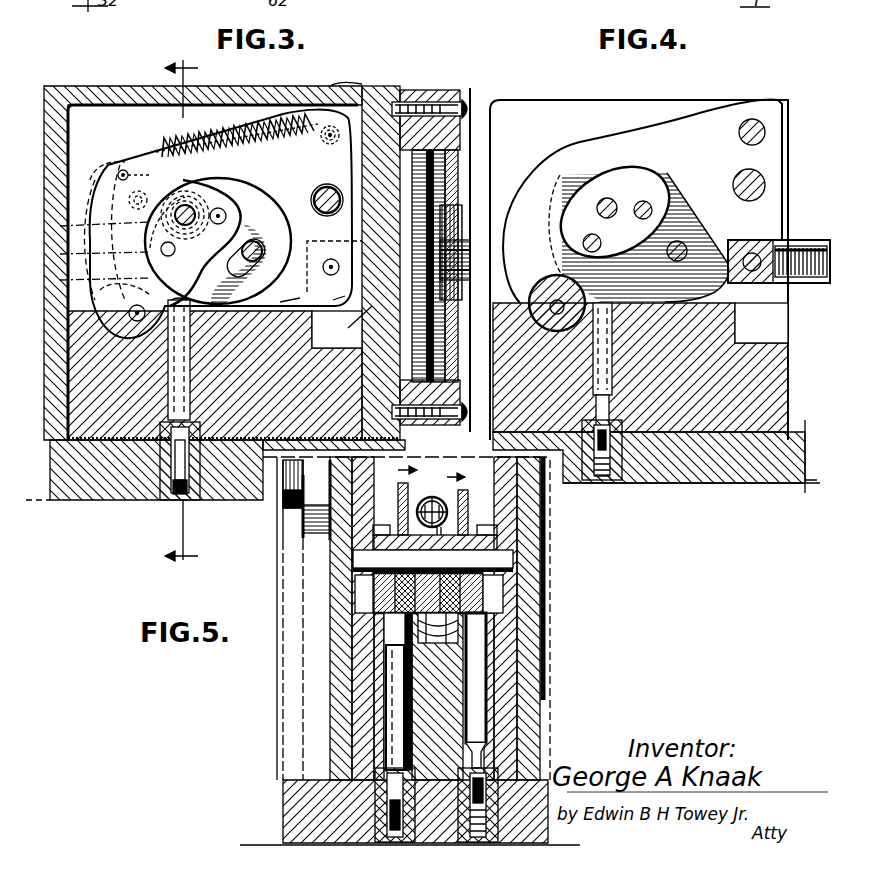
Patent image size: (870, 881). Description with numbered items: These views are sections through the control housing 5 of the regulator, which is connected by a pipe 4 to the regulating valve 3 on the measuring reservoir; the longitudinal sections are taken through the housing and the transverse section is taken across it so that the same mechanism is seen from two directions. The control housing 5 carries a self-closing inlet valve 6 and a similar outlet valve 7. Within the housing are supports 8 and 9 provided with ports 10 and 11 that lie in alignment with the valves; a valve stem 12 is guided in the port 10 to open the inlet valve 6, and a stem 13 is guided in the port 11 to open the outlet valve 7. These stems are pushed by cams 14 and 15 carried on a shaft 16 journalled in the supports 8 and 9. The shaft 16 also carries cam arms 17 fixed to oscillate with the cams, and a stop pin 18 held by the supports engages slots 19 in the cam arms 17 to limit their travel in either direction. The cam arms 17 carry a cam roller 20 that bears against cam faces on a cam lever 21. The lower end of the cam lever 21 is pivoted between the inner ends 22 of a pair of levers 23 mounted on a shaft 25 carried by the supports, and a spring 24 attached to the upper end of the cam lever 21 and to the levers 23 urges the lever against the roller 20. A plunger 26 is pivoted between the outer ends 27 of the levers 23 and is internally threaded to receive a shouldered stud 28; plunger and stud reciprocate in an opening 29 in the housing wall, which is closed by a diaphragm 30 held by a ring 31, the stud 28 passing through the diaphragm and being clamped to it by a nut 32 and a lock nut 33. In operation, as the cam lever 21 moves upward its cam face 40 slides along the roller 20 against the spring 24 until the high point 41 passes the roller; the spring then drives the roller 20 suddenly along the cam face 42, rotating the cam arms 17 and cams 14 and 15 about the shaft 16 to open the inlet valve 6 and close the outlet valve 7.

In FIG. 5, the regulating valve 3 is at (258, 845).
In FIG. 5, the pipe 4 is at (442, 496).
In FIG. 3, the control housing 5 is at (28, 119).
In FIG. 4, the control housing 5 is at (790, 470).
In FIG. 4, the inlet valve 6 is at (614, 480).
In FIG. 5, the inlet valve 6 is at (546, 766).
In FIG. 3, the outlet valve 7 is at (165, 478).
In FIG. 5, the outlet valve 7 is at (405, 796).
In FIG. 3, the support 8 is at (381, 263).
In FIG. 4, the support 8 is at (776, 386).
In FIG. 5, the support 8 is at (546, 688).
In FIG. 3, the support 9 is at (90, 393).
In FIG. 5, the support 9 is at (412, 706).
In FIG. 4, the port 10 is at (612, 404).
In FIG. 5, the port 10 is at (546, 742).
In FIG. 3, the port 11 is at (195, 393).
In FIG. 5, the port 11 is at (330, 760).
In FIG. 4, the valve stem 12 is at (610, 362).
In FIG. 5, the valve stem 12 is at (546, 665).
In FIG. 5, the stem 13 is at (395, 672).
In FIG. 3, the cam 14 is at (167, 222).
In FIG. 4, the cam 14 is at (617, 225).
In FIG. 5, the cam 14 is at (546, 598).
In FIG. 3, the cam 15 is at (185, 228).
In FIG. 5, the cam 15 is at (400, 640).
In FIG. 3, the shaft 16 is at (195, 214).
In FIG. 4, the shaft 16 is at (628, 200).
In FIG. 5, the shaft 16 is at (546, 548).
In FIG. 3, the cam arms 17 is at (178, 262).
In FIG. 5, the cam arms 17 is at (546, 576).
In FIG. 3, the stop pin 18 is at (258, 250).
In FIG. 4, the stop pin 18 is at (680, 244).
In FIG. 3, the slots 19 is at (307, 246).
In FIG. 3, the cam roller 20 is at (140, 181).
In FIG. 3, the cam lever 21 is at (112, 155).
In FIG. 5, the cam lever 21 is at (546, 628).
In FIG. 3, the inner ends 22 is at (125, 322).
In FIG. 3, the levers 23 is at (172, 140).
In FIG. 4, the levers 23 is at (578, 140).
In FIG. 5, the levers 23 is at (290, 520).
In FIG. 3, the spring 24 is at (335, 92).
In FIG. 5, the spring 24 is at (546, 506).
In FIG. 3, the shaft 25 is at (327, 190).
In FIG. 4, the shaft 25 is at (742, 180).
In FIG. 3, the plunger 26 is at (342, 298).
In FIG. 4, the plunger 26 is at (790, 246).
In FIG. 3, the outer ends 27 is at (283, 300).
In FIG. 4, the outer ends 27 is at (752, 284).
In FIG. 3, the shouldered stud 28 is at (371, 314).
In FIG. 4, the shouldered stud 28 is at (800, 284).
In FIG. 3, the opening 29 is at (360, 333).
In FIG. 3, the diaphragm 30 is at (455, 115).
In FIG. 3, the ring 31 is at (425, 96).
In FIG. 3, the nut 32 is at (455, 245).
In FIG. 3, the lock nut 33 is at (468, 252).
In FIG. 3, the cam face 40 is at (60, 226).
In FIG. 3, the high point 41 is at (60, 254).
In FIG. 3, the cam face 42 is at (60, 280).